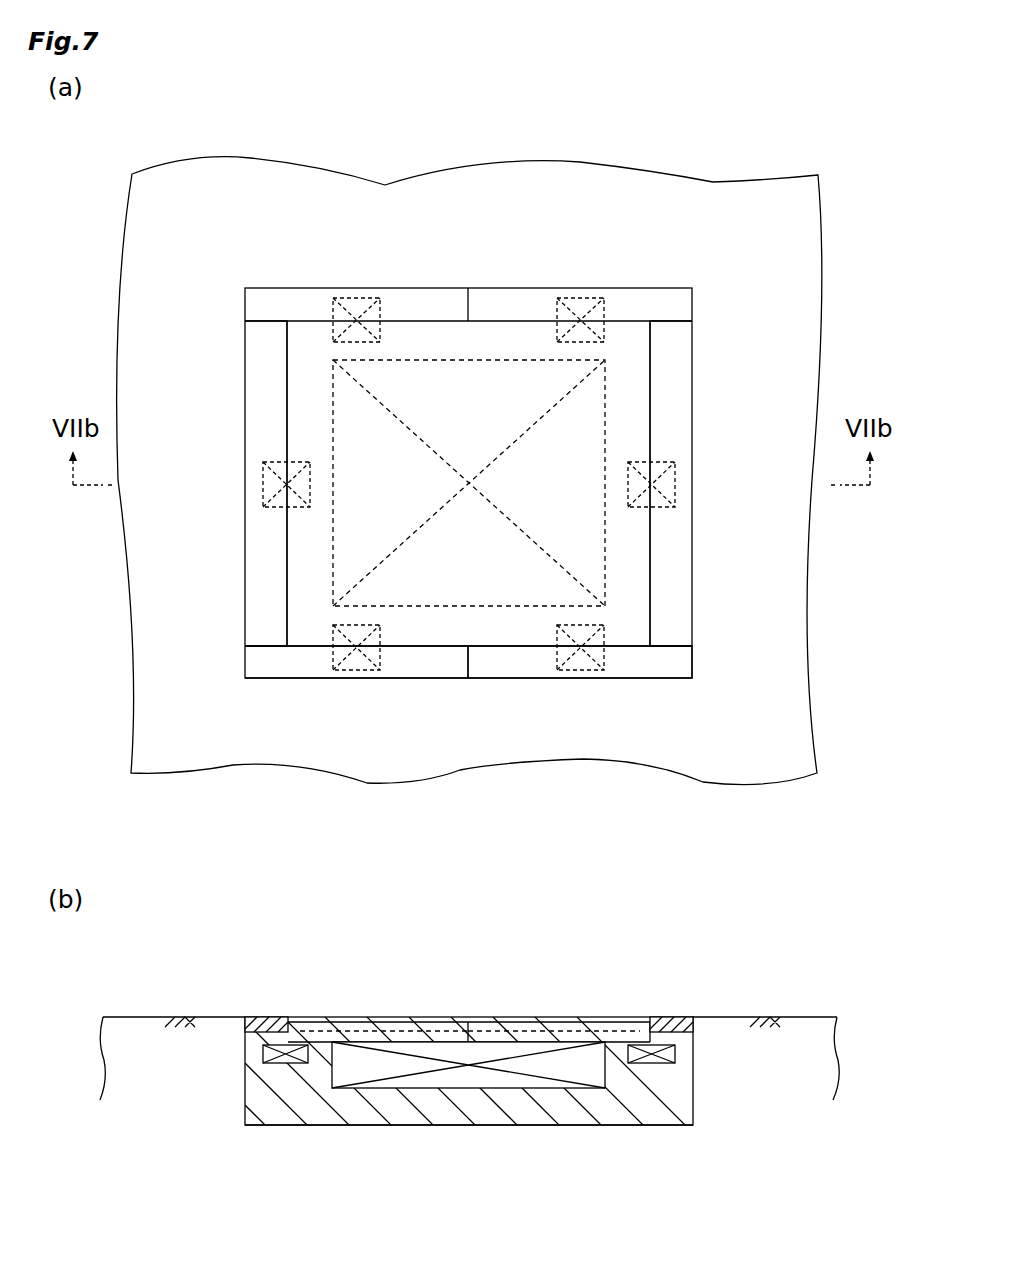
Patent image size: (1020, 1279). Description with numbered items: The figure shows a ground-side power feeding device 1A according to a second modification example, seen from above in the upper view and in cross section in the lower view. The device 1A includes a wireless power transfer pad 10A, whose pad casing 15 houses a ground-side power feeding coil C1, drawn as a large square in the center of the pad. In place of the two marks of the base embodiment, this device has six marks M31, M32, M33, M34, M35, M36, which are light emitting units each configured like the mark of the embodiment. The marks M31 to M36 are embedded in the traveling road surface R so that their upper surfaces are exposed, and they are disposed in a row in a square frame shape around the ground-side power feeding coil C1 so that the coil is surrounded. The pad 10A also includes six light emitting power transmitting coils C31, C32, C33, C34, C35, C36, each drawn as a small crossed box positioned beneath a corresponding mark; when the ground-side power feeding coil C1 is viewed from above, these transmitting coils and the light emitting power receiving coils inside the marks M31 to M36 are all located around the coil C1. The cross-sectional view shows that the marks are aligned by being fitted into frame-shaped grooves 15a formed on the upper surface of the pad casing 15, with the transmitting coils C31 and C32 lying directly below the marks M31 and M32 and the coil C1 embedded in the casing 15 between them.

The ground-side power feeding device 1A is at (600, 230).
The wireless power transfer pad 10A is at (373, 1130).
The pad casing 15 is at (662, 1128).
The frame-shaped grooves 15a is at (254, 1022).
The traveling road surface R is at (768, 195).
The ground-side power feeding coil C1 is at (432, 360).
The light emitting power transmitting coil C31 is at (263, 488).
The light emitting power transmitting coil C32 is at (675, 492).
The light emitting power transmitting coil C33 is at (367, 680).
The light emitting power transmitting coil C34 is at (582, 680).
The light emitting power transmitting coil C35 is at (358, 298).
The light emitting power transmitting coil C36 is at (580, 298).
The mark M31 is at (263, 1015).
The mark M32 is at (675, 1015).
The mark M33 is at (267, 680).
The mark M34 is at (673, 680).
The mark M35 is at (380, 1020).
The mark M36 is at (508, 1020).